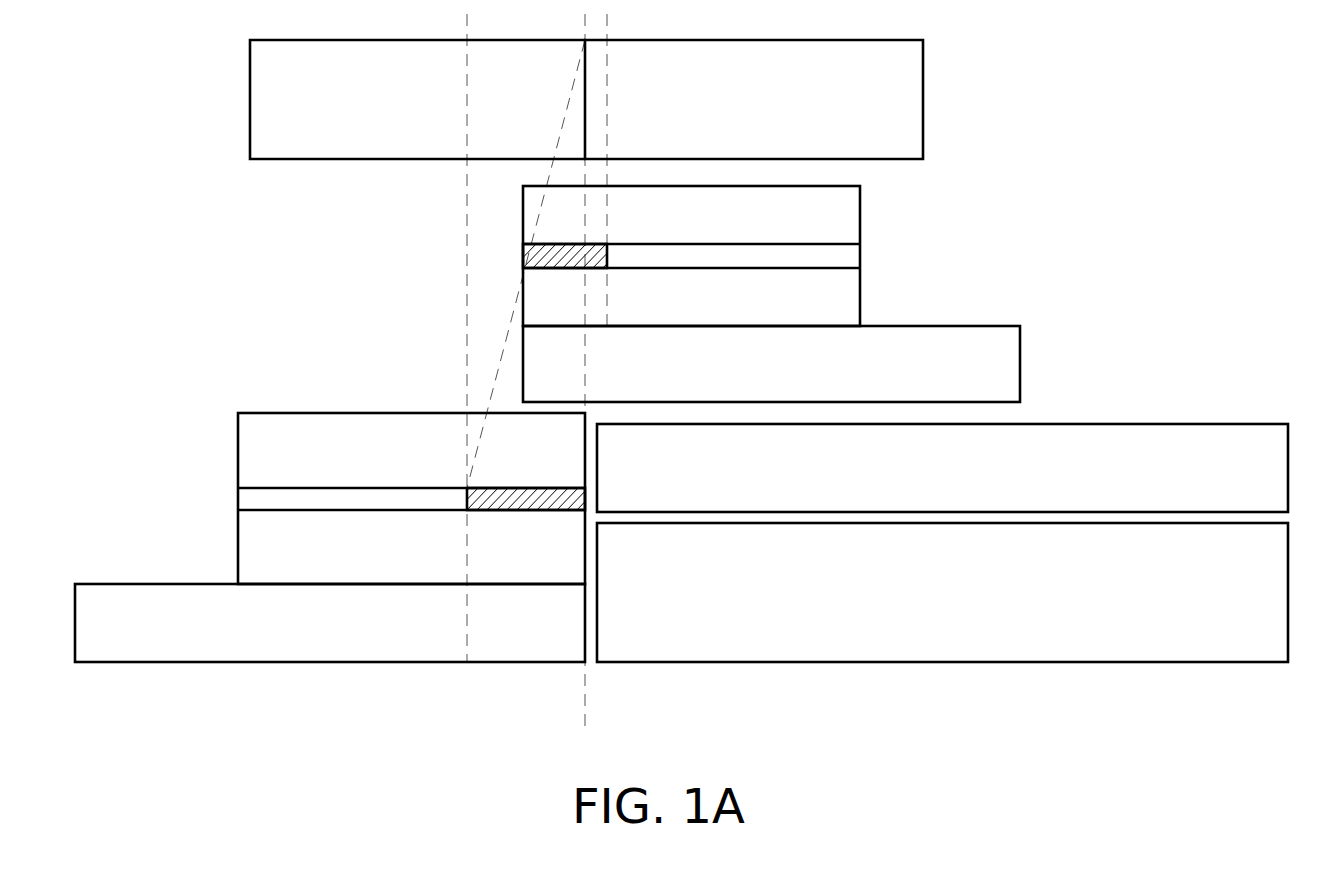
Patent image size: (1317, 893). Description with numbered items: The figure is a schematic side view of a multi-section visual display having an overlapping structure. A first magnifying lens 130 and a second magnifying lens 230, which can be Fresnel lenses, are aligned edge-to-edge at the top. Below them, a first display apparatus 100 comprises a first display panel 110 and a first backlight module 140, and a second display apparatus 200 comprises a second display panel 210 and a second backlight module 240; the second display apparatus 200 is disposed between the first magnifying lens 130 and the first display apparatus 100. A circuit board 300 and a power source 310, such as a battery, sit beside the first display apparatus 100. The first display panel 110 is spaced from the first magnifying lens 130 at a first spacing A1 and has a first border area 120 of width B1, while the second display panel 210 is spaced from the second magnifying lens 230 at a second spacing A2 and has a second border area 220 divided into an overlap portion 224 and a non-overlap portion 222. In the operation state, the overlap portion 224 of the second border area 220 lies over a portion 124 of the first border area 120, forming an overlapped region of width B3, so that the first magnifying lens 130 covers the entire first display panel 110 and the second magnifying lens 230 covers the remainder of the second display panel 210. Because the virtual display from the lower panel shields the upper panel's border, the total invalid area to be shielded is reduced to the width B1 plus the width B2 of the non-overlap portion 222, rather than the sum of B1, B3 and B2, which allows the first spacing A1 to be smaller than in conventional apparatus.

The first display apparatus 100 is at (160, 455).
The first display panel 110 is at (247, 496).
The first border area 120 is at (565, 503).
The portion of the first border area 124 is at (548, 492).
The first magnifying lens 130 is at (375, 113).
The first backlight module 140 is at (298, 633).
The second display apparatus 200 is at (990, 250).
The second display panel 210 is at (848, 254).
The second border area 220 is at (383, 198).
The non-overlap portion 222 is at (597, 243).
The overlap portion 224 is at (523, 259).
The second magnifying lens 230 is at (793, 113).
The second backlight module 240 is at (901, 378).
The circuit board 300 is at (992, 485).
The power source 310 is at (992, 610).
The first spacing A1 is at (268, 488).
The second spacing A2 is at (917, 188).
The width of the first border area B1 is at (585, 557).
The width of the non-overlap portion B2 is at (655, 313).
The width of the overlap portion B3 is at (585, 313).